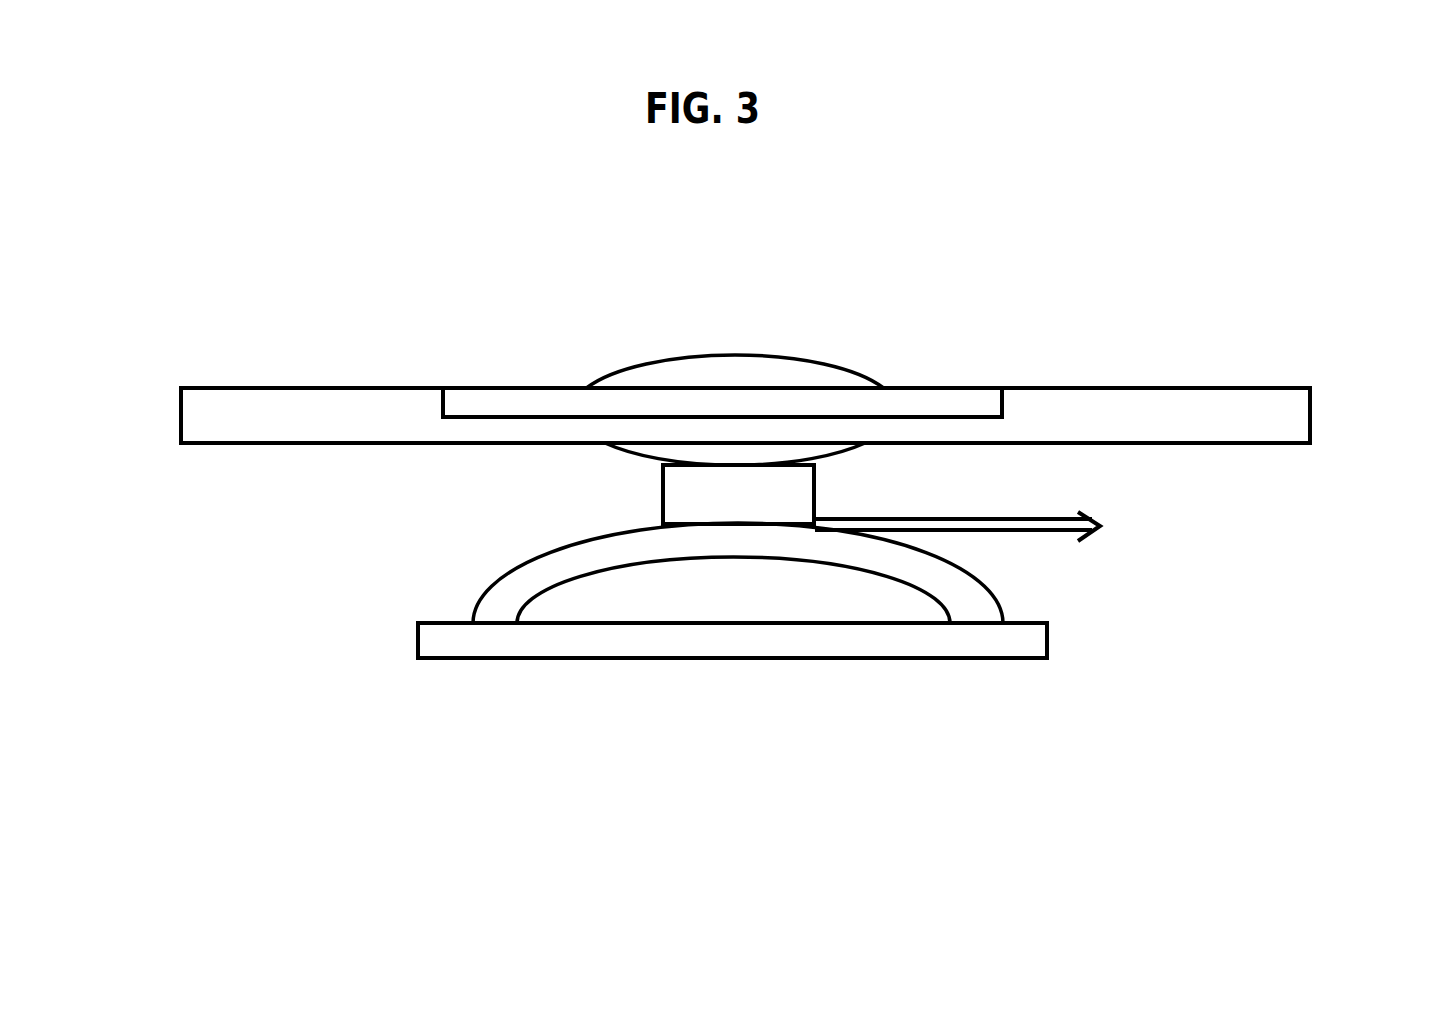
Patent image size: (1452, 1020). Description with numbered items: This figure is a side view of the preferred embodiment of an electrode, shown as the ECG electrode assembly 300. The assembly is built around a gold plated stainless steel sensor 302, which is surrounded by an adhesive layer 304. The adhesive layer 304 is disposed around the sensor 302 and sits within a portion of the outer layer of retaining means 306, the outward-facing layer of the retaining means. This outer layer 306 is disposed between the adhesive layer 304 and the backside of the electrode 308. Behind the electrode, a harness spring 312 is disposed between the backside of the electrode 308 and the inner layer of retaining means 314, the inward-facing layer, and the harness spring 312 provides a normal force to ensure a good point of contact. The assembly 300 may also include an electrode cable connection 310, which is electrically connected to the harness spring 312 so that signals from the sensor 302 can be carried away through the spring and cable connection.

The ECG electrode assembly 300 is at (331, 235).
The gold plated stainless steel sensor 302 is at (818, 357).
The adhesive layer 304 is at (963, 398).
The outer layer of retaining means 306 is at (1267, 425).
The backside of the electrode 308 is at (645, 468).
The electrode cable connection 310 is at (1100, 528).
The harness spring 312 is at (473, 610).
The inner layer of retaining means 314 is at (1053, 647).